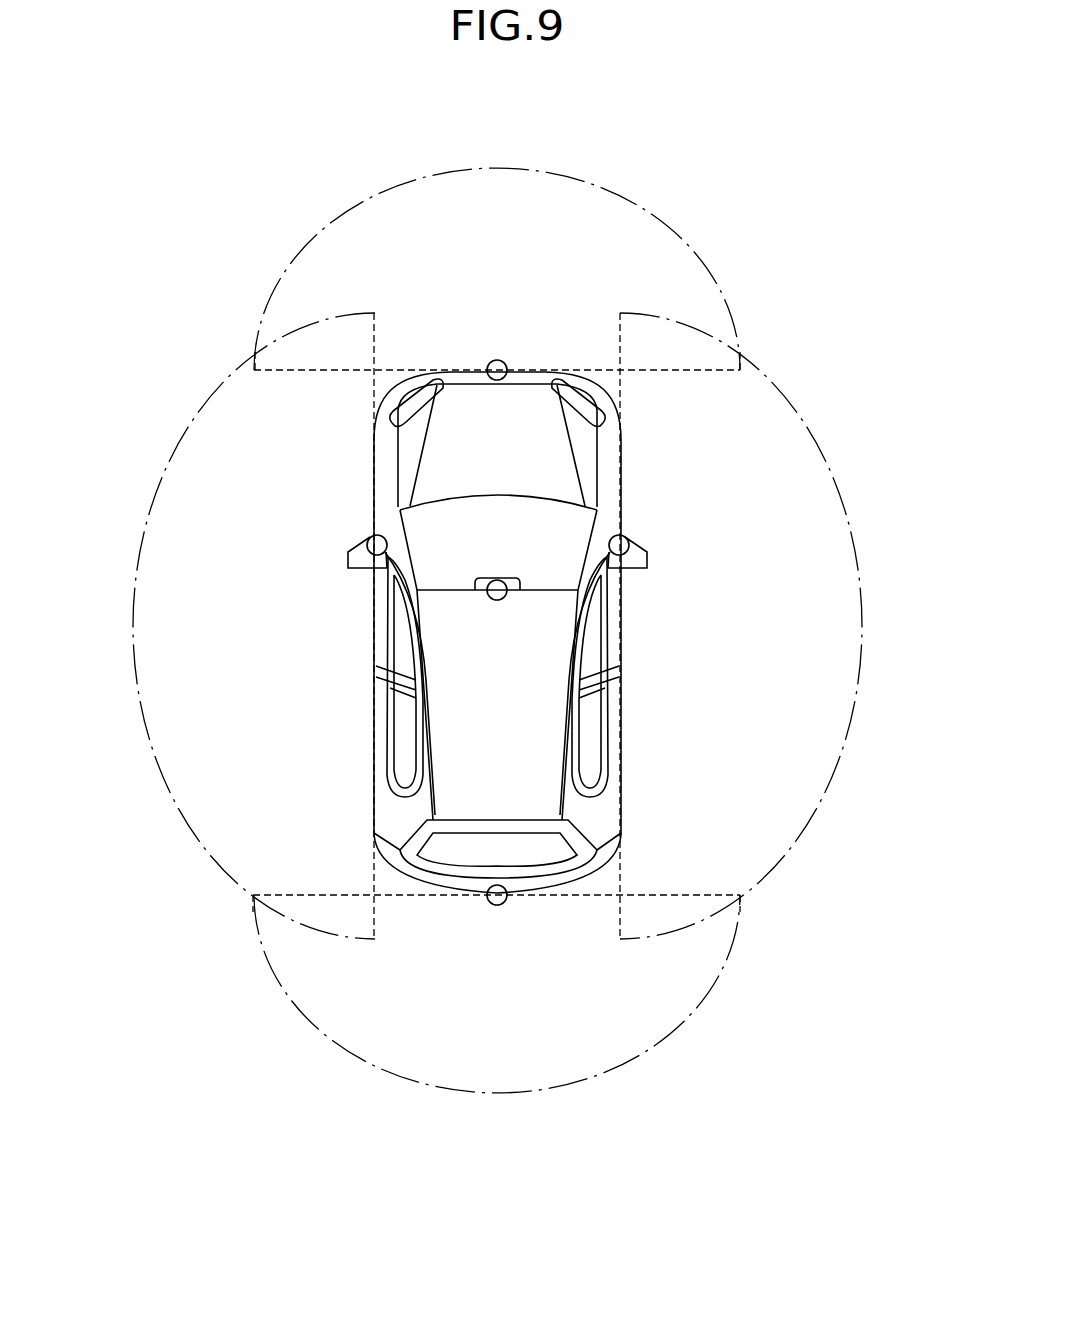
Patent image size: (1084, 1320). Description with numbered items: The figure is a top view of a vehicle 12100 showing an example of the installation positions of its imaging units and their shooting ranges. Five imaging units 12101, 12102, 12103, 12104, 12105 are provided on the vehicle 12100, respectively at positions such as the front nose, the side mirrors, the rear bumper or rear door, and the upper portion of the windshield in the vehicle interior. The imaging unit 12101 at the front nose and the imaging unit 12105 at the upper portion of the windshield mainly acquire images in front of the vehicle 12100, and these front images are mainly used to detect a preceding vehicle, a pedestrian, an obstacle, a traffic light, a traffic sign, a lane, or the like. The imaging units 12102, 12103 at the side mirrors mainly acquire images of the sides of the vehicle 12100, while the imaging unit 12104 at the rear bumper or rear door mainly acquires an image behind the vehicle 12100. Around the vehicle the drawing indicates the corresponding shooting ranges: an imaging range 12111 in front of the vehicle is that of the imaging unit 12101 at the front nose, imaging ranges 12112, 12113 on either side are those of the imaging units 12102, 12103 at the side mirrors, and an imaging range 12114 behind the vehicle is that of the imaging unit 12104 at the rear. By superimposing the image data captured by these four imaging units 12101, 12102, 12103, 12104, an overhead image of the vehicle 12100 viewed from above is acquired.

The vehicle 12100 is at (385, 474).
The imaging unit 12101 is at (497, 360).
The imaging unit 12102 is at (366, 545).
The imaging unit 12103 is at (630, 545).
The imaging unit 12104 is at (497, 905).
The imaging unit 12105 is at (502, 599).
The imaging range 12111 is at (497, 170).
The imaging range 12112 is at (187, 432).
The imaging range 12113 is at (809, 432).
The imaging range 12114 is at (494, 1094).